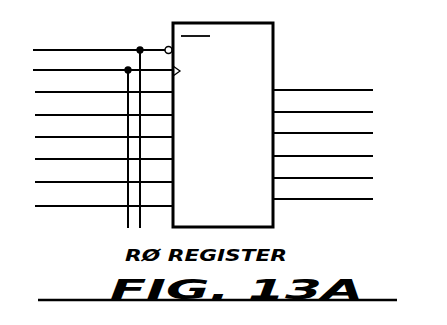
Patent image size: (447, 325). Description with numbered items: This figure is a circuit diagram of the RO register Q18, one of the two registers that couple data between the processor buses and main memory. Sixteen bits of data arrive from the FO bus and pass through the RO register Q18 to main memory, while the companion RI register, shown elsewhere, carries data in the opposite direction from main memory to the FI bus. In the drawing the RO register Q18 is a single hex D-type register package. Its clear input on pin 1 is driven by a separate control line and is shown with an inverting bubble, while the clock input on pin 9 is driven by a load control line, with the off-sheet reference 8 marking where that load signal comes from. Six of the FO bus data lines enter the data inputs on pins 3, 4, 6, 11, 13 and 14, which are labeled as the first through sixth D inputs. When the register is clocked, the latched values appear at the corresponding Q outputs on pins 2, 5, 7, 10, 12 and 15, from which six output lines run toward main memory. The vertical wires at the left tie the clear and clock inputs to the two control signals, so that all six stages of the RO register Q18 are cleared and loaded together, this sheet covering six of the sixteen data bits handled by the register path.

The RO register Q18 is at (223, 115).
The CLR pin, 5VR106 signal 1 is at (102, 43).
The CLK pin, LDR0NX signal 9 is at (103, 62).
The sheet connector reference for LDR0NX 8 is at (17, 64).
The 1D input pin, F015 signal 3 is at (104, 84).
The 2D input pin, F014 signal 4 is at (104, 107).
The 3D input pin, F013 signal 6 is at (104, 129).
The 4D input pin, F012 signal 11 is at (104, 151).
The 5D input pin, F011 signal 13 is at (104, 174).
The 6D input pin, F010 signal 14 is at (104, 197).
The 1Q output pin, R015 signal 2 is at (323, 82).
The 2Q output pin, R014 signal 5 is at (323, 104).
The 3Q output pin, R013 signal 7 is at (323, 125).
The 4Q output pin, R012 signal 10 is at (323, 148).
The 5Q output pin, R011 signal 12 is at (323, 170).
The 6Q output pin, R010 signal 15 is at (323, 191).